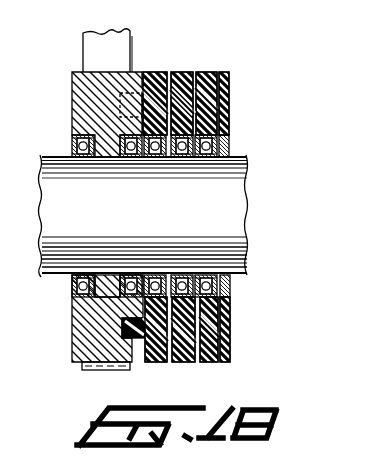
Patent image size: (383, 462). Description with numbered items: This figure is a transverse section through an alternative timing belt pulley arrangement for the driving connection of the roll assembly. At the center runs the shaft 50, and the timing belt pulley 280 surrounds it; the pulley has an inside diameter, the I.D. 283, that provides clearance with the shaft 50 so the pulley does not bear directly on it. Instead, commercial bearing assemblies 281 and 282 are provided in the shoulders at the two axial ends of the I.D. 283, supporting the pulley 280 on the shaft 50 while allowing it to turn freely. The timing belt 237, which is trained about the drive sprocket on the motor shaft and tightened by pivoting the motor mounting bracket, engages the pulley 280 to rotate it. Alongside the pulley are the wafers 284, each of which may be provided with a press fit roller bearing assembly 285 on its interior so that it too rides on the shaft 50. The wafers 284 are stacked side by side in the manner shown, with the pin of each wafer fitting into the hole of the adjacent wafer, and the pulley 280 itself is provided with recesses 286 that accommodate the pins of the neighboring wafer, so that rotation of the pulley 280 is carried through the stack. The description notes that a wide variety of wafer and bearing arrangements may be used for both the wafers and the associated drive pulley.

The shaft 50 is at (235, 211).
The timing belt 237 is at (122, 43).
The timing belt pulley 280 is at (78, 330).
The bearing assembly 281 is at (79, 262).
The bearing assembly 282 is at (128, 273).
The I.D. 283 is at (103, 273).
The wafer 284 is at (204, 72).
The roller bearing assembly 285 is at (207, 158).
The recess 286 is at (137, 70).